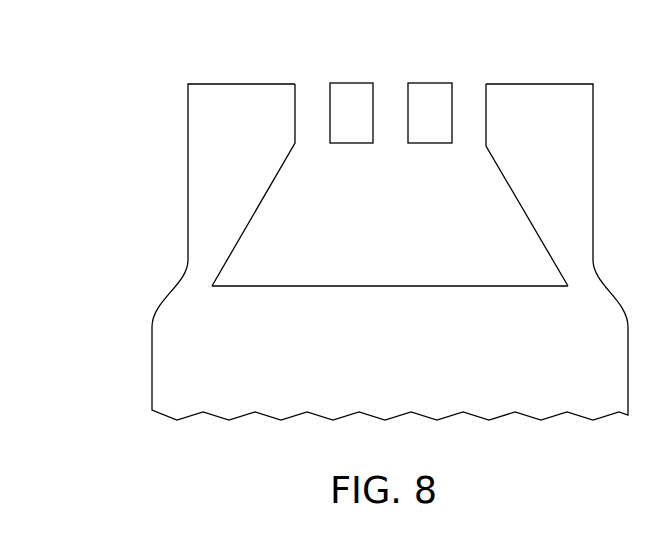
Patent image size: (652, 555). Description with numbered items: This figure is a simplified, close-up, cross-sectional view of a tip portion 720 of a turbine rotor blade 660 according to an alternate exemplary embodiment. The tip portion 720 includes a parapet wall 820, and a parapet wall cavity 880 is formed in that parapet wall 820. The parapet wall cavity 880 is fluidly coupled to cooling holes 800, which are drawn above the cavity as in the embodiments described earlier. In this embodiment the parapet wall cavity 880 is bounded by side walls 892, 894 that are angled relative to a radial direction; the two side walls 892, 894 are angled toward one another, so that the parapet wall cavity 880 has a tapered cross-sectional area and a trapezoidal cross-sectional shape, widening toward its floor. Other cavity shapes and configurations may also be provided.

The turbine rotor blade 660 is at (133, 90).
The tip portion 720 is at (133, 326).
The cooling holes 800 is at (308, 96).
The parapet wall 820 is at (188, 175).
The parapet wall cavity 880 is at (420, 208).
The side wall 892 is at (257, 213).
The side wall 894 is at (525, 213).